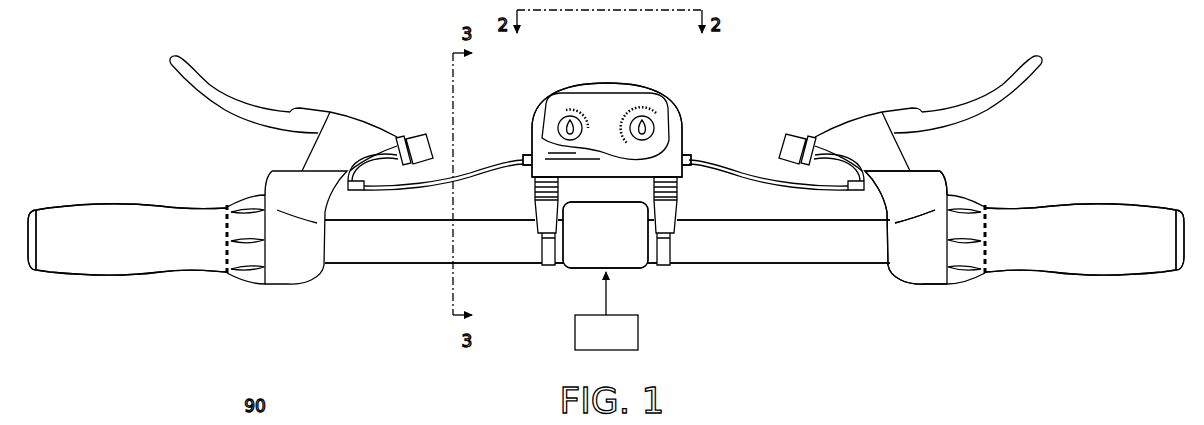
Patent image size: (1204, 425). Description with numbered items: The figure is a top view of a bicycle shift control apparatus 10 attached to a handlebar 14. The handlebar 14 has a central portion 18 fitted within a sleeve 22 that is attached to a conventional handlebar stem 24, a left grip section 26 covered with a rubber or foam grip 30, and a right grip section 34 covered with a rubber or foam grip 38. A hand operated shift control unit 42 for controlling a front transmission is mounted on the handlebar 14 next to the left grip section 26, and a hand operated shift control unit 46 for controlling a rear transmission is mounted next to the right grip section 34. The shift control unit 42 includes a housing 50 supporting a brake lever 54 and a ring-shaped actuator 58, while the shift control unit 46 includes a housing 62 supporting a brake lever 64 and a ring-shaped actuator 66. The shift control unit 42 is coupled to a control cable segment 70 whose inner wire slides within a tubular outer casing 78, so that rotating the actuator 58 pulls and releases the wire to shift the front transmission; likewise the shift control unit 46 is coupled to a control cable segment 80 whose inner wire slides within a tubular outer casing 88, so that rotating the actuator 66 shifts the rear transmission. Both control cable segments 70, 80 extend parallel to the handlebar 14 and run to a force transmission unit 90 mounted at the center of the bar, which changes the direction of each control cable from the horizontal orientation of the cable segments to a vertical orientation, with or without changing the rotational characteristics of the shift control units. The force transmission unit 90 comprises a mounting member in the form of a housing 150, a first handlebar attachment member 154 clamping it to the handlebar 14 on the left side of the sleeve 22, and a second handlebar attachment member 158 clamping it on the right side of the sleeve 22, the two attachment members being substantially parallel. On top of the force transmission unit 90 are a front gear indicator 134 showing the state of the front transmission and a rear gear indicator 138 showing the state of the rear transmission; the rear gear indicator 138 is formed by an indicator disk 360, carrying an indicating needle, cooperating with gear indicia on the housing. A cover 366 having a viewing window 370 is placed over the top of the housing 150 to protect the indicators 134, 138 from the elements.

The bicycle shift control apparatus 10 is at (730, 65).
The handlebar 14 is at (772, 268).
The central portion 18 is at (613, 192).
The sleeve 22 is at (640, 272).
The handlebar stem 24 is at (640, 338).
The left grip section 26 is at (148, 192).
The grip 30 is at (128, 282).
The right grip section 34 is at (1068, 192).
The grip 38 is at (1080, 283).
The shift control unit 42 is at (273, 298).
The shift control unit 46 is at (905, 300).
The housing 50 is at (280, 174).
The brake lever 54 is at (270, 111).
The ring-shaped actuator 58 is at (247, 288).
The housing 62 is at (932, 288).
The brake lever 64 is at (944, 112).
The ring-shaped actuator 66 is at (966, 194).
The control cable segment 70 is at (445, 168).
The tubular outer casing 78 is at (435, 190).
The control cable segment 80 is at (741, 166).
The tubular outer casing 88 is at (777, 189).
The force transmission unit 90 is at (637, 74).
The housing 150 is at (530, 135).
The first handlebar attachment member 154 is at (548, 273).
The second handlebar attachment member 158 is at (668, 273).
The front gear indicator 134 is at (562, 108).
The rear gear indicator 138 is at (657, 117).
The indicator disk 360 is at (655, 127).
The cover 366 is at (545, 120).
The viewing window 370 is at (552, 117).